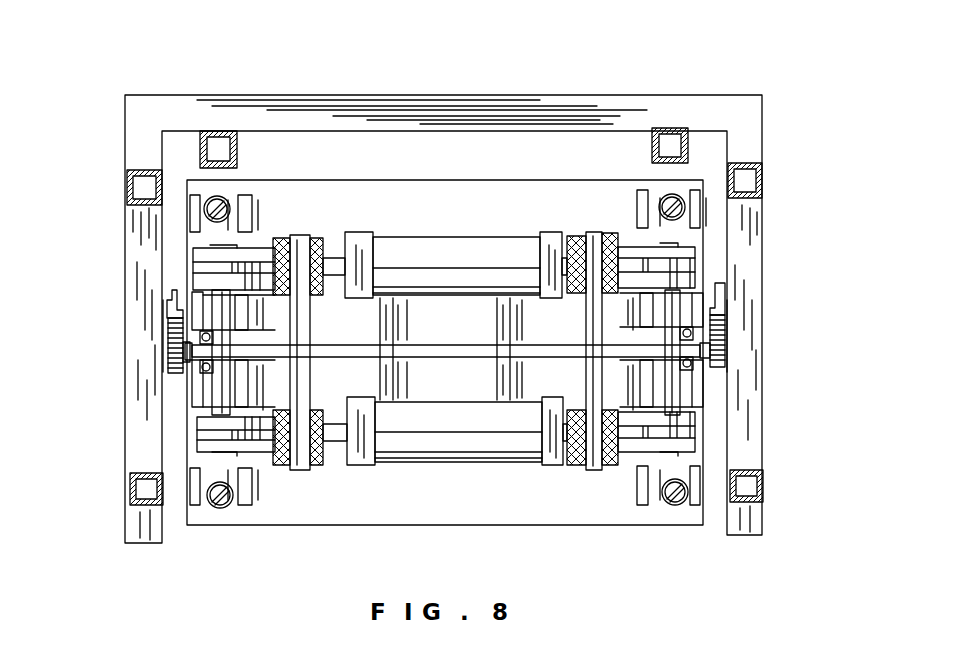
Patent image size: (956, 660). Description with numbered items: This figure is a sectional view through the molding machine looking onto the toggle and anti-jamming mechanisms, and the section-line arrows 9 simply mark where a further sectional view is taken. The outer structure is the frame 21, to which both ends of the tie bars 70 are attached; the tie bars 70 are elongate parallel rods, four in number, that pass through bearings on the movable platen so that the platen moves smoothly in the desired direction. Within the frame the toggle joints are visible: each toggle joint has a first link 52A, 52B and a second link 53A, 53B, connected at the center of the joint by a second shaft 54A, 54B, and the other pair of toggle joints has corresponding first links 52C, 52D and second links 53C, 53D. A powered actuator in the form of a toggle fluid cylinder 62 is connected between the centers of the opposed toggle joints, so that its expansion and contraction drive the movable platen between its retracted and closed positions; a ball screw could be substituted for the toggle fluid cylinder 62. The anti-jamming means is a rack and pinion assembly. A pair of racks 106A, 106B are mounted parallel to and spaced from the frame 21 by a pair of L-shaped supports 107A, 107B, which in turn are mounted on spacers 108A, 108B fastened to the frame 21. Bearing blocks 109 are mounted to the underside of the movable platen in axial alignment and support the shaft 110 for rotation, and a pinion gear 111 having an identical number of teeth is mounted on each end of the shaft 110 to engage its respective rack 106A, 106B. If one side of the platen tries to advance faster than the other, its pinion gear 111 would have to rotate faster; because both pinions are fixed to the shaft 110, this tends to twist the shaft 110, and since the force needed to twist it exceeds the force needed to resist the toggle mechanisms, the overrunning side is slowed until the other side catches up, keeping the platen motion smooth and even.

The frame 21 is at (600, 91).
The section line indicator 9 is at (152, 63).
The tie bar 70 is at (223, 199).
The first link 52A is at (630, 255).
The first link 52B is at (262, 262).
The roller support block 52C is at (263, 445).
The roller support block 52D is at (632, 443).
The second link 53A is at (572, 242).
The second link 53B is at (327, 262).
The roller bearing coupling 53C is at (325, 452).
The roller bearing coupling 53D is at (575, 455).
The toggle fluid cylinder 62 is at (415, 247).
The second shaft 54A is at (590, 300).
The second shaft 54B is at (302, 305).
The shaft 110 is at (410, 354).
The L-shaped support 107A is at (720, 292).
The L-shaped support 107B is at (180, 288).
The spacer 108A is at (728, 300).
The spacer 108B is at (165, 300).
The rack 106A is at (726, 326).
The rack 106B is at (168, 331).
The pinion gear 111 is at (176, 353).
The bearing block 109 is at (200, 366).